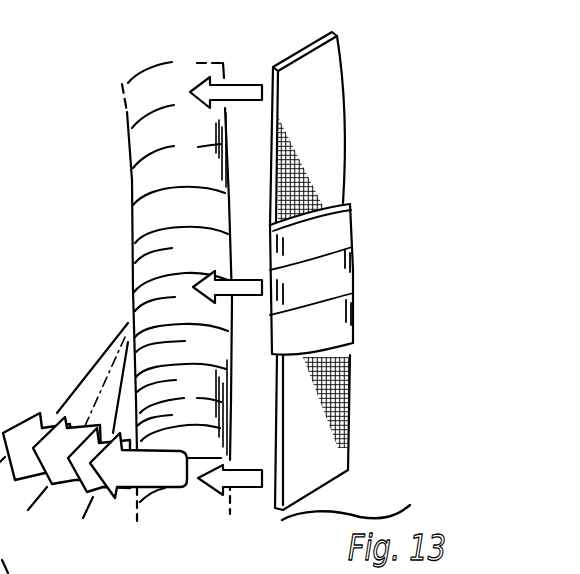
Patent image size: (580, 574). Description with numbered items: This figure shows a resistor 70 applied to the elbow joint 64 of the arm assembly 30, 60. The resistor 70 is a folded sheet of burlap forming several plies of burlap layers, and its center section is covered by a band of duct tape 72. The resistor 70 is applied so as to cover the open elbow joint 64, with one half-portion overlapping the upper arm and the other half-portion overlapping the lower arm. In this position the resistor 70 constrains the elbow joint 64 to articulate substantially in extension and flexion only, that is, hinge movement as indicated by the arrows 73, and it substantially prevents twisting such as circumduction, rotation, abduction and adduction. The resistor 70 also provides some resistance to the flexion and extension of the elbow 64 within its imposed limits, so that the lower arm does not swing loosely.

The cylinder 30 is at (116, 317).
The tube 60 is at (58, 195).
The elbow joint 64 is at (120, 288).
The resistor 70 is at (330, 80).
The band of duct tape 72 is at (338, 317).
The arrows 73 is at (64, 484).